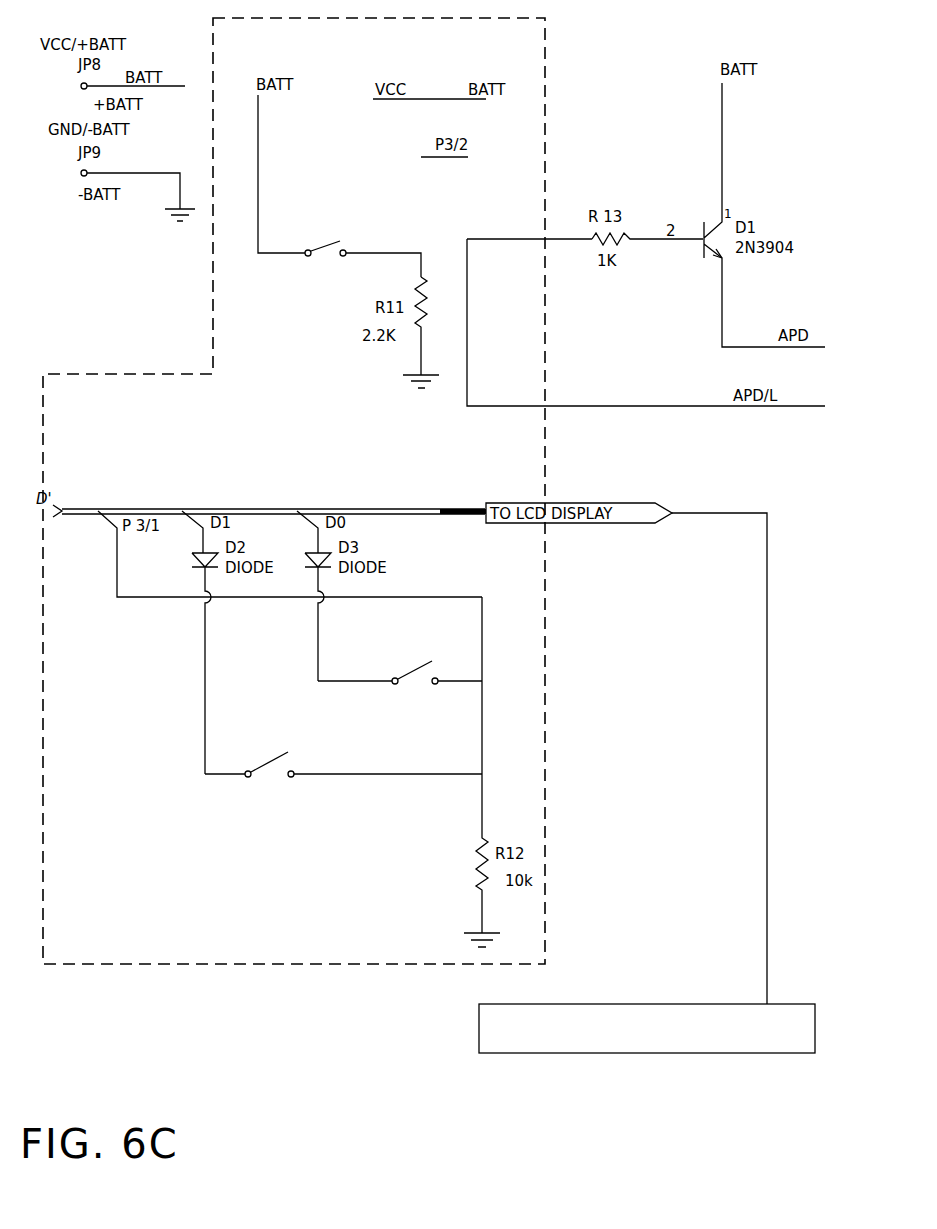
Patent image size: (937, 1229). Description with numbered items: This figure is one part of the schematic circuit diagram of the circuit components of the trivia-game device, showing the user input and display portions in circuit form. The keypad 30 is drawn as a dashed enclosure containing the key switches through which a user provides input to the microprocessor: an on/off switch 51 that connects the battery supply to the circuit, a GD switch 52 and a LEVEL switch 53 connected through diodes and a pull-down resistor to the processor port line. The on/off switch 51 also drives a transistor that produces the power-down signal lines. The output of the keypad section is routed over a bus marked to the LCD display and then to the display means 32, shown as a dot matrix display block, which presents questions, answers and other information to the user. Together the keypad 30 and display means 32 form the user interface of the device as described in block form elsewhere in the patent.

The keypad 30 is at (548, 638).
The display means 32 is at (478, 1030).
The on/off switch 51 is at (333, 253).
The GD switch 52 is at (254, 765).
The level switch 53 is at (385, 669).